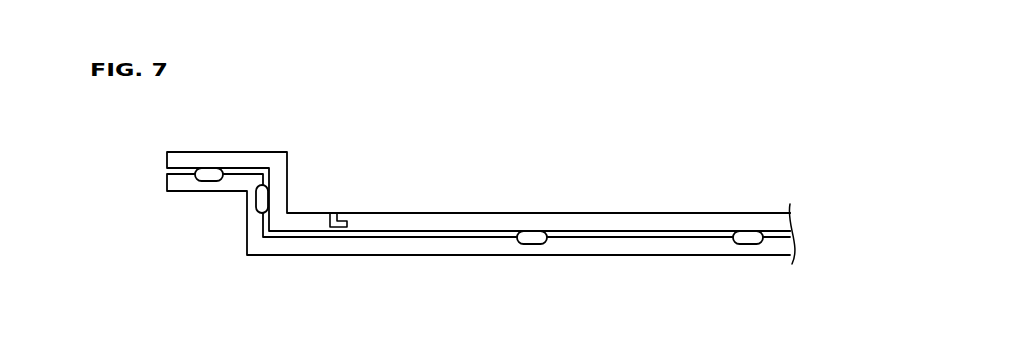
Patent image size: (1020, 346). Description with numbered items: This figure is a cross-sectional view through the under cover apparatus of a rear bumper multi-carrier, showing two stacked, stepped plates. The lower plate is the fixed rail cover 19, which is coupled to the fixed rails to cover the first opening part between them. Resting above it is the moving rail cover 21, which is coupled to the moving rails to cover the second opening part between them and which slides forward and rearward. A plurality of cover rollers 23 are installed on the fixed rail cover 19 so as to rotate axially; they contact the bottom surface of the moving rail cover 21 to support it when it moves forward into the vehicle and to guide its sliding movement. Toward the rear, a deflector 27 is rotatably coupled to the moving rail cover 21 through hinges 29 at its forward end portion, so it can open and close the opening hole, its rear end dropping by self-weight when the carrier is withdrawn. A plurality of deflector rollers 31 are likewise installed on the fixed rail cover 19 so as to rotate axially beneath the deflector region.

The fixed rail cover 19 is at (446, 250).
The moving rail cover 21 is at (252, 160).
The cover roller 23 is at (209, 170).
The deflector 27 is at (637, 213).
The hinge 29 is at (342, 217).
The deflector roller 31 is at (532, 240).